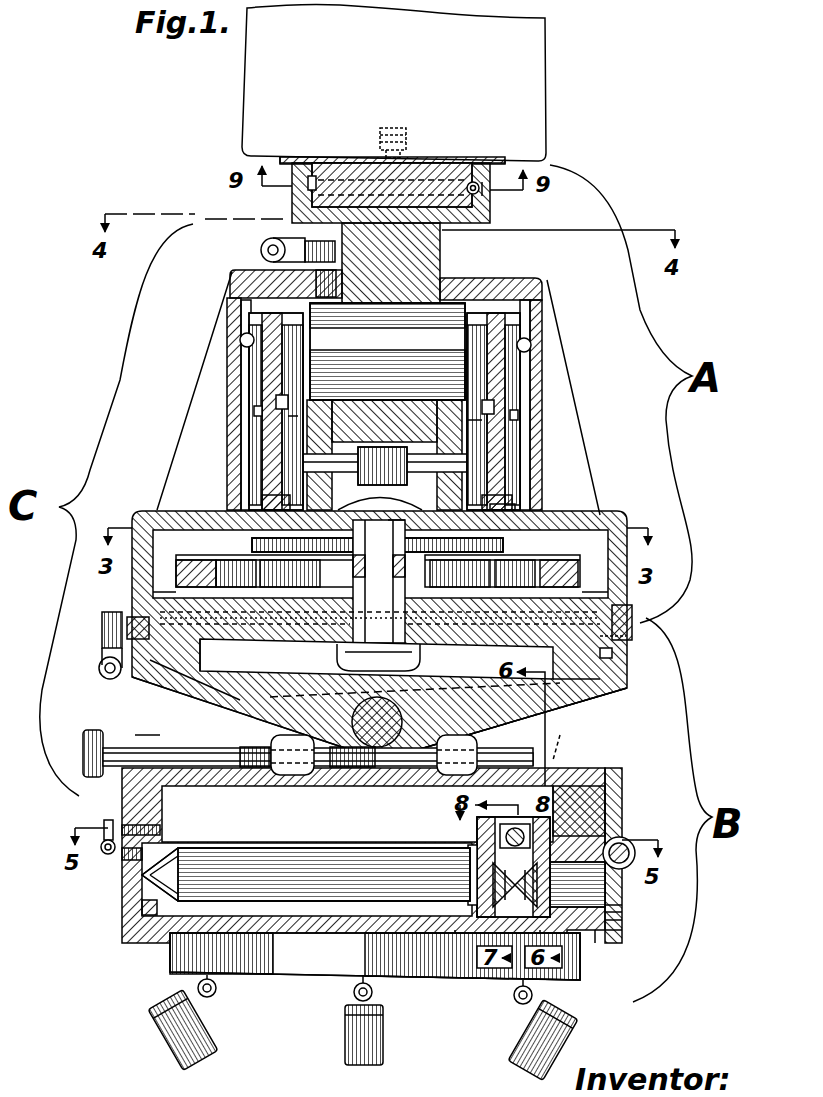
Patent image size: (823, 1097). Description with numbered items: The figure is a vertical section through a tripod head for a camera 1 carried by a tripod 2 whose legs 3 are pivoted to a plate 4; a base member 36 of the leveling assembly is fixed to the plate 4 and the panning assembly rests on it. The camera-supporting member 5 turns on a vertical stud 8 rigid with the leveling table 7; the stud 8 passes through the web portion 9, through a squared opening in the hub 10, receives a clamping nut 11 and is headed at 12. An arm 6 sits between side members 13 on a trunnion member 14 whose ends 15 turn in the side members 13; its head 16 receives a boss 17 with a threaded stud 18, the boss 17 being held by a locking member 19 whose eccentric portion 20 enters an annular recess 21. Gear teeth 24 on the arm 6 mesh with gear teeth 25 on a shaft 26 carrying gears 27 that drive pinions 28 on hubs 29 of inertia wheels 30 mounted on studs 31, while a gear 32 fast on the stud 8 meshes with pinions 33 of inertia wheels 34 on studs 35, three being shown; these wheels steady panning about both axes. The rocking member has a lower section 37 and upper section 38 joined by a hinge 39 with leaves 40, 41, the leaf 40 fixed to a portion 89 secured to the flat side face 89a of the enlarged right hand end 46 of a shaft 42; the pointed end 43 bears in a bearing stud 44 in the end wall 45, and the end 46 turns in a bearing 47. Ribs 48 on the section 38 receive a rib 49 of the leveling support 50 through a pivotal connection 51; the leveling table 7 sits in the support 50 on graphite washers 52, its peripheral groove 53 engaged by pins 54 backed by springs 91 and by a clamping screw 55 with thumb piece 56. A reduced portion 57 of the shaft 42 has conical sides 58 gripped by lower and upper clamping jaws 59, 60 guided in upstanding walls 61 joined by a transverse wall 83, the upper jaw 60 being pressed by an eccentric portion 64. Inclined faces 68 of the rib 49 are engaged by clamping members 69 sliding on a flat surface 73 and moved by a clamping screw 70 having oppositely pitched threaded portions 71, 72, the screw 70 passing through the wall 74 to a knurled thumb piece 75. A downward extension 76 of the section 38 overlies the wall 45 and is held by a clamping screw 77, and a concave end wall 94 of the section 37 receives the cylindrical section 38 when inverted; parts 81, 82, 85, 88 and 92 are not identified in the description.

The camera 1 is at (532, 57).
The tripod 2 is at (152, 1036).
The legs 3 is at (200, 1034).
The plate 4 is at (298, 960).
The camera-supporting member 5 is at (592, 520).
The arm 6 is at (424, 262).
The leveling table 7 is at (600, 696).
The vertical stud 8 is at (379, 581).
The horizontal web portion 9 is at (500, 512).
The hub 10 is at (420, 652).
The clamping nut 11 is at (335, 660).
The head of stud 12 is at (358, 512).
The upstanding side members 13 is at (262, 447).
The horizontal trunnion member 14 is at (387, 351).
The ends of trunnion member 15 is at (316, 312).
The head 16 is at (492, 212).
The boss 17 is at (445, 172).
The screw-threaded stud 18 is at (377, 136).
The locking member 19 is at (486, 190).
The eccentric portion 20 is at (478, 183).
The annular recess 21 is at (306, 186).
The gear teeth 24 is at (440, 476).
The gear teeth 25 is at (388, 496).
The shaft 26 is at (360, 468).
The gear 27 is at (285, 505).
The small pinion 28 is at (280, 400).
The hub 29 is at (252, 413).
The inertia wheel 30 is at (241, 338).
The stud 31 is at (290, 422).
The gear 32 is at (394, 546).
The small pinions 33 is at (252, 546).
The inertia wheels 34 is at (192, 560).
The studs 35 is at (380, 595).
The base member 36 is at (160, 928).
The lower section 37 is at (624, 938).
The upper section 38 is at (610, 790).
The hinge 39 is at (628, 842).
The leaf 40 is at (605, 885).
The leaf 41 is at (600, 812).
The shaft 42 is at (345, 880).
The pointed end 43 is at (142, 900).
The bearing stud 44 is at (142, 878).
The end wall 45 is at (117, 852).
The right hand end 46 is at (548, 943).
The bearing 47 is at (576, 945).
The ribs 48 is at (590, 707).
The rib 49 is at (222, 697).
The leveling support 50 is at (585, 673).
The pivotal connection 51 is at (293, 728).
The graphite washers 52 is at (214, 618).
The peripheral groove 53 is at (150, 652).
The inwardly-projecting pins 54 is at (630, 620).
The clamping screw 55 is at (105, 640).
The thumb piece 56 is at (99, 667).
The portion of reduced diameter 57 is at (492, 890).
The conical sides 58 is at (500, 880).
The lower clamping jaw 59 is at (480, 936).
The upper clamping jaw 60 is at (500, 857).
The upstanding walls 61 is at (512, 822).
The eccentric portion 64 is at (525, 830).
The inclined faces 68 is at (245, 720).
The clamping members 69 is at (293, 776).
The clamping screw 70 is at (212, 768).
The screw-threaded portion 71 is at (260, 768).
The screw-threaded portion 72 is at (522, 761).
The flat surface 73 is at (362, 770).
The wall 74 is at (135, 735).
The knurled thumb piece 75 is at (83, 756).
The downward extension 76 is at (158, 832).
The clamping screw 77 is at (108, 820).
The knurled nut 81 is at (300, 284).
The thumb screw 82 is at (262, 248).
The transverse upstanding wall 83 is at (477, 827).
The ring 85 is at (468, 870).
The pin 88 is at (606, 943).
The portion of lower section 89 is at (625, 914).
The flat side face 89a is at (630, 906).
The springs 91 is at (640, 636).
The groove 92 is at (270, 620).
The concave end wall 94 is at (627, 925).